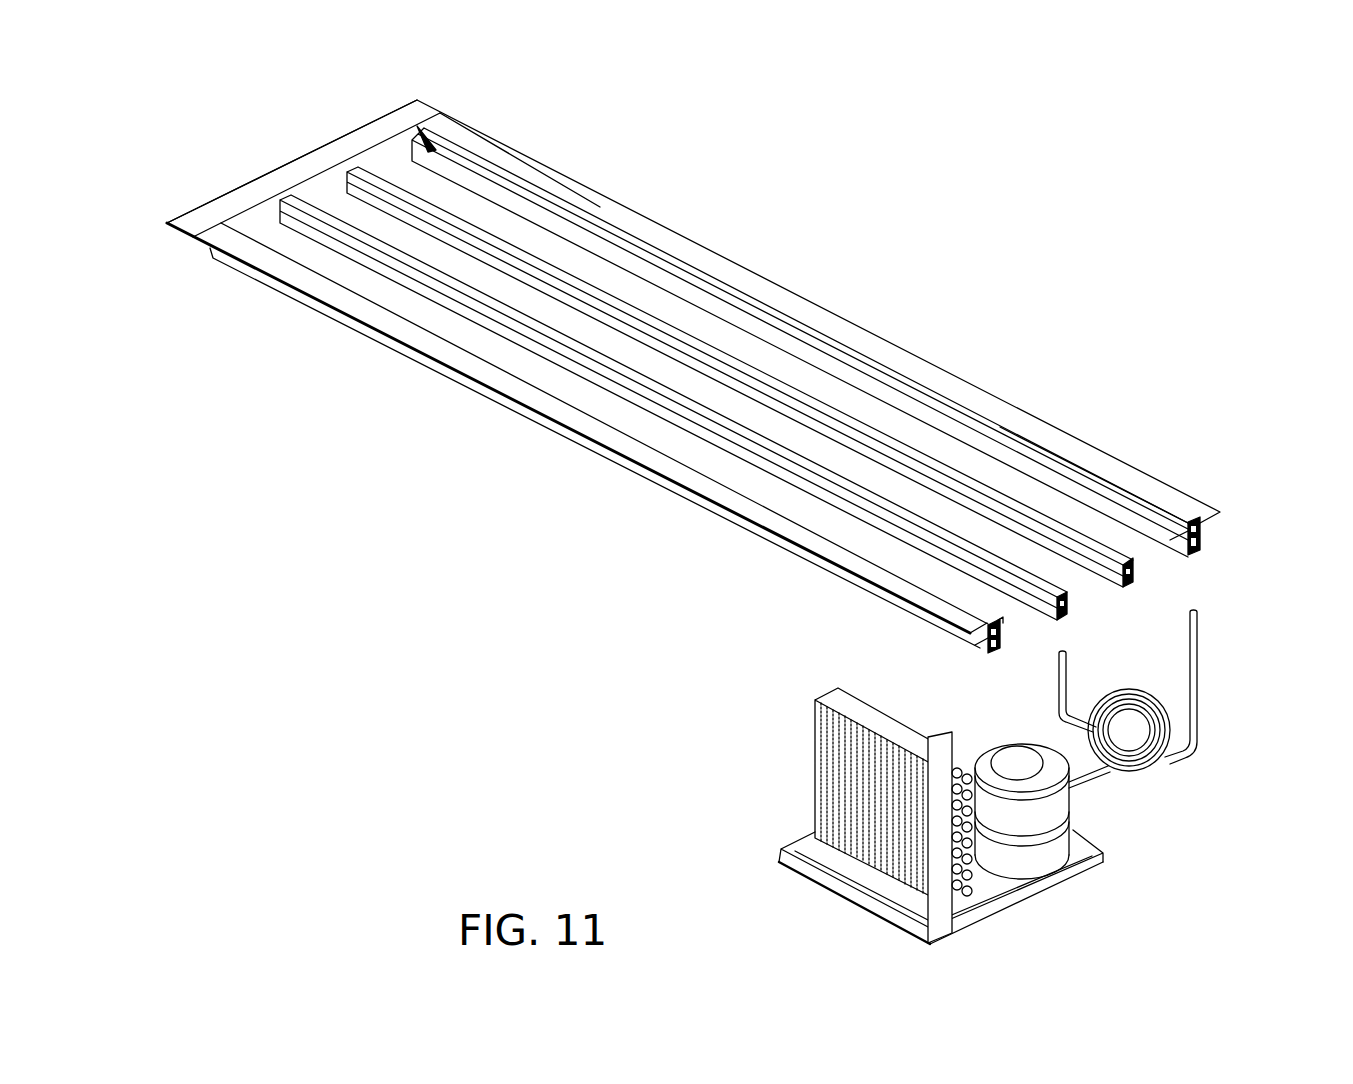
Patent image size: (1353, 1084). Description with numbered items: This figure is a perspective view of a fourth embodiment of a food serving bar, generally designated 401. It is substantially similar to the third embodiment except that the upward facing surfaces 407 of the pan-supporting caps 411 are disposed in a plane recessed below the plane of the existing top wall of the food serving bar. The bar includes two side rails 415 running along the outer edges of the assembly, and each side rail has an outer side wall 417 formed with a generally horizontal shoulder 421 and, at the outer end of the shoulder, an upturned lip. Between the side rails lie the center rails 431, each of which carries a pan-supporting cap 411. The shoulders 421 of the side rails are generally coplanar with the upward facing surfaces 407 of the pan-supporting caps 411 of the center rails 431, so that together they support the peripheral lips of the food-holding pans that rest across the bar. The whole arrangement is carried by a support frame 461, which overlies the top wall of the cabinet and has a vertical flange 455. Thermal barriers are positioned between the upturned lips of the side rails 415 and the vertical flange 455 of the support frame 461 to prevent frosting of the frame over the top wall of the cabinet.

The food serving bar 401 is at (1092, 318).
The upward facing surface 407 is at (480, 228).
The pan-supporting cap 411 is at (800, 388).
The side rail 415 is at (1205, 540).
The outer side wall 417 is at (1173, 543).
The shoulder 421 is at (417, 128).
The center rail 431 is at (1028, 520).
The vertical flange 455 is at (1162, 512).
The support frame 461 is at (303, 163).